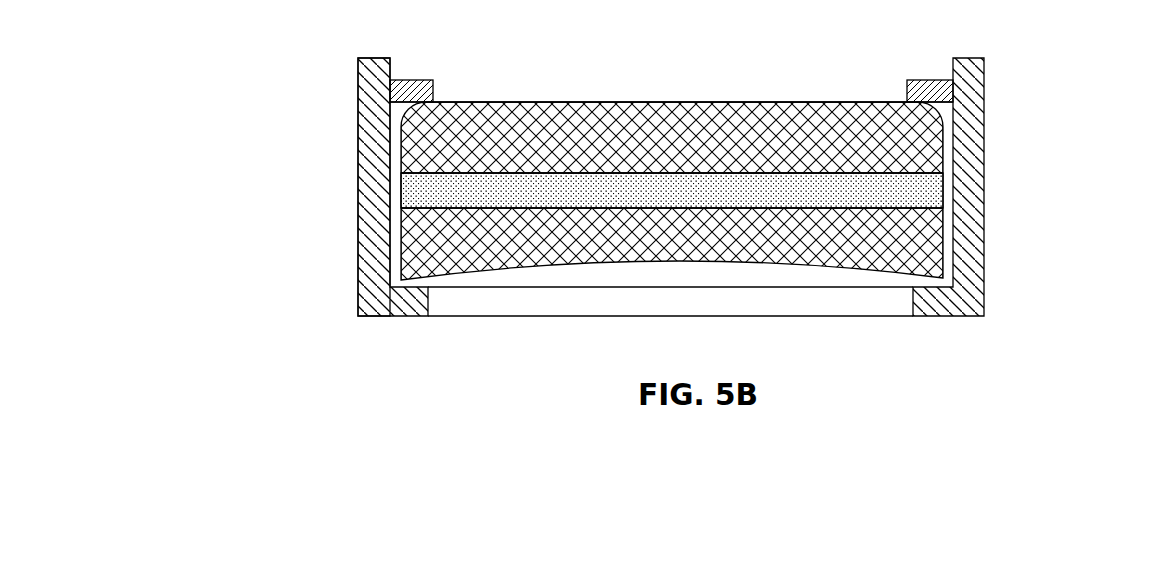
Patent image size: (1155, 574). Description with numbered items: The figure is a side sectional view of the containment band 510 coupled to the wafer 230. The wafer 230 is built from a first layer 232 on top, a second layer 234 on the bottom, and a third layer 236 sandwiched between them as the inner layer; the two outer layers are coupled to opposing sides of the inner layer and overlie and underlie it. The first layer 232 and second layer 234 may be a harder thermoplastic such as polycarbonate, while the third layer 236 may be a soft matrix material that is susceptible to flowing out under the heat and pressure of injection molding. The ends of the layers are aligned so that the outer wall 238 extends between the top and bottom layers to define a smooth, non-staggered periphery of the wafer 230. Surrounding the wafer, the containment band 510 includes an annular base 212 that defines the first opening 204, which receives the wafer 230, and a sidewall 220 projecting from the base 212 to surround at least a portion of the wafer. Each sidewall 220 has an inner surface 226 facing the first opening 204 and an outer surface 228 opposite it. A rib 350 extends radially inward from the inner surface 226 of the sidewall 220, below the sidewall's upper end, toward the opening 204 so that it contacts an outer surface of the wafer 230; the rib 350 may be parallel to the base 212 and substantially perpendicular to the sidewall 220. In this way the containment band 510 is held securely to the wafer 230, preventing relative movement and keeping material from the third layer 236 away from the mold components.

The first opening 204 is at (547, 348).
The base 212 is at (382, 318).
The sidewall 220 is at (340, 125).
The inner surface 226 is at (390, 63).
The outer surface 228 is at (361, 75).
The wafer 230 is at (672, 149).
The first layer 232 is at (686, 150).
The second layer 234 is at (686, 248).
The third layer 236 is at (686, 203).
The outer wall 238 is at (958, 146).
The rib 350 is at (912, 65).
The containment band 510 is at (1035, 48).